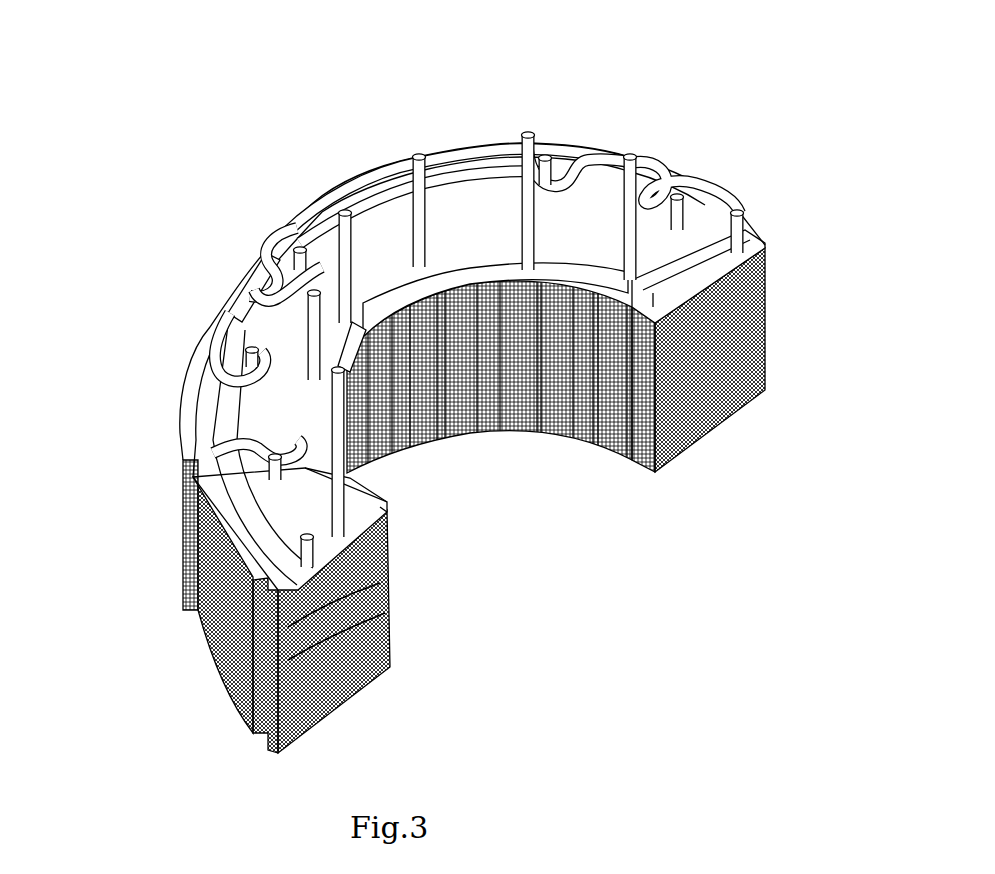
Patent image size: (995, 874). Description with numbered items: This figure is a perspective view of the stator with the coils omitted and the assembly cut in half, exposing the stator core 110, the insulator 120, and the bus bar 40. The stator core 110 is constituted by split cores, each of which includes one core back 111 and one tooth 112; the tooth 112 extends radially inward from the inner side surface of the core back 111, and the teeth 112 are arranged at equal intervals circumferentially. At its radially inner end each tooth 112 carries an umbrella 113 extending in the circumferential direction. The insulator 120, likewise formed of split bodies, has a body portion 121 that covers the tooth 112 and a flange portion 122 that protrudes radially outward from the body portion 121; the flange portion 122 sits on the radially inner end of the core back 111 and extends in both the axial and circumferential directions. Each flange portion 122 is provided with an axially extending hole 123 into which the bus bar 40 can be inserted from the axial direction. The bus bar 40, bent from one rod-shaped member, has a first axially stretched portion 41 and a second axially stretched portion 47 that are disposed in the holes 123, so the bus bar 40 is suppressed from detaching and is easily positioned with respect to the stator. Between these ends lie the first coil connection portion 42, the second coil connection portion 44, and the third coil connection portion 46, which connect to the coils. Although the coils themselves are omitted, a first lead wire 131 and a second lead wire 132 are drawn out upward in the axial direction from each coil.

The bus bar 40 is at (340, 174).
The first axially stretched portion 41 is at (607, 157).
The first coil connection portion 42 is at (563, 153).
The second coil connection portion 44 is at (380, 160).
The third coil connection portion 46 is at (280, 230).
The second axially stretched portion 47 is at (220, 297).
The stator core 110 is at (95, 585).
The core back 111 is at (210, 605).
The tooth 112 is at (200, 633).
The umbrella 113 is at (200, 660).
The insulator 120 is at (470, 150).
The body portion 121 is at (337, 527).
The flange portion 122 is at (210, 472).
The hole 123 is at (237, 307).
The first lead wire 131 is at (233, 363).
The second lead wire 132 is at (340, 413).